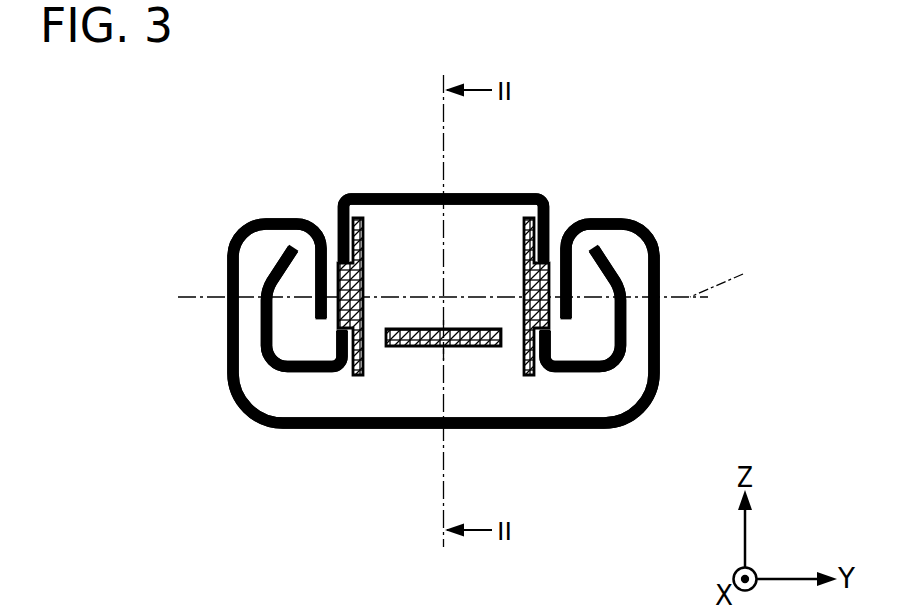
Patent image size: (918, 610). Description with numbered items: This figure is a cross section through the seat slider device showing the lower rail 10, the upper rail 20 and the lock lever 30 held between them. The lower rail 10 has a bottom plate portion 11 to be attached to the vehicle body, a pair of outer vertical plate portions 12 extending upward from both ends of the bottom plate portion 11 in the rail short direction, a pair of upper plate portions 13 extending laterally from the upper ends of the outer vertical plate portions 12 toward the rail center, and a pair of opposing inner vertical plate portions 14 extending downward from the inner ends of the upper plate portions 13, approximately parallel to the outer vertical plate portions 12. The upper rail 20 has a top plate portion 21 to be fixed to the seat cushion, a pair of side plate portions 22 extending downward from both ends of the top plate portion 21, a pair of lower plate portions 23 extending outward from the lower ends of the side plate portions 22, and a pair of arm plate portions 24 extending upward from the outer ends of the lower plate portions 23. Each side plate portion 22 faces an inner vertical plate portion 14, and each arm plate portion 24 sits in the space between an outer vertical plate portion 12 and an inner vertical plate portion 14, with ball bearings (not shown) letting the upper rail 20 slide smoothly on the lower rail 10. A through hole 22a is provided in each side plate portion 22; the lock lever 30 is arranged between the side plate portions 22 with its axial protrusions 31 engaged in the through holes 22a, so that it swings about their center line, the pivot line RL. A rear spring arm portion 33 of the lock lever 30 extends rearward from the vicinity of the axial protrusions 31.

The lower rail 10 is at (673, 215).
The bottom plate portion 11 is at (486, 428).
The outer vertical plate portion 12 is at (238, 350).
The upper plate portion 13 is at (265, 220).
The inner vertical plate portion 14 is at (312, 286).
The upper rail 20 is at (517, 175).
The top plate portion 21 is at (390, 193).
The side plate portion 22 is at (347, 218).
The through hole 22a is at (342, 328).
The lower plate portion 23 is at (298, 372).
The arm plate portion 24 is at (260, 303).
The lock lever 30 is at (512, 245).
The axial protrusion 31 is at (315, 287).
The rear spring arm portion 33 is at (407, 347).
The pivot line RL is at (736, 277).